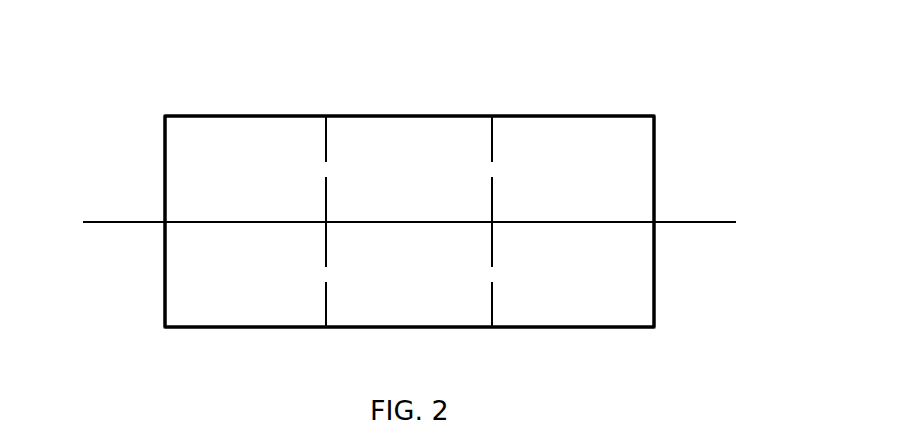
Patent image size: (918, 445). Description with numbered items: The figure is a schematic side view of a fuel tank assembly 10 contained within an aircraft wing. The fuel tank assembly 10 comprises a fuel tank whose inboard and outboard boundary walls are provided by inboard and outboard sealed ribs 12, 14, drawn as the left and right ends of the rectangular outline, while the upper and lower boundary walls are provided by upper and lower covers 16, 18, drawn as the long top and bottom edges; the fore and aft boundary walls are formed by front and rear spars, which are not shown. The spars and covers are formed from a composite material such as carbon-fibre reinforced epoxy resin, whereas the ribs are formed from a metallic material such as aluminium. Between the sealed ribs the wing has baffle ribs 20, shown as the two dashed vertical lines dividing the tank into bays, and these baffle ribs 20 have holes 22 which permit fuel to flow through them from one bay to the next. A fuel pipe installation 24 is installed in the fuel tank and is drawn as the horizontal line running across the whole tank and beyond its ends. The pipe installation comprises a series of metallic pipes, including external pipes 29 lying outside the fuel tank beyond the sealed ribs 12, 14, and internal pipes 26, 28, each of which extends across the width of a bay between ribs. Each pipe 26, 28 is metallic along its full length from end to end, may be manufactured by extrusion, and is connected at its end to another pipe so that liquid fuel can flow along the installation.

The fuel tank assembly 10 is at (243, 95).
The inboard sealed rib 12 is at (163, 138).
The outboard sealed rib 14 is at (657, 140).
The upper cover 16 is at (572, 329).
The lower cover 18 is at (603, 113).
The baffle ribs 20 is at (328, 140).
The holes 22 is at (326, 272).
The fuel pipe installation 24 is at (124, 211).
The first pipe 26 is at (235, 220).
The second pipe 28 is at (385, 220).
The external pipes 29 is at (102, 225).